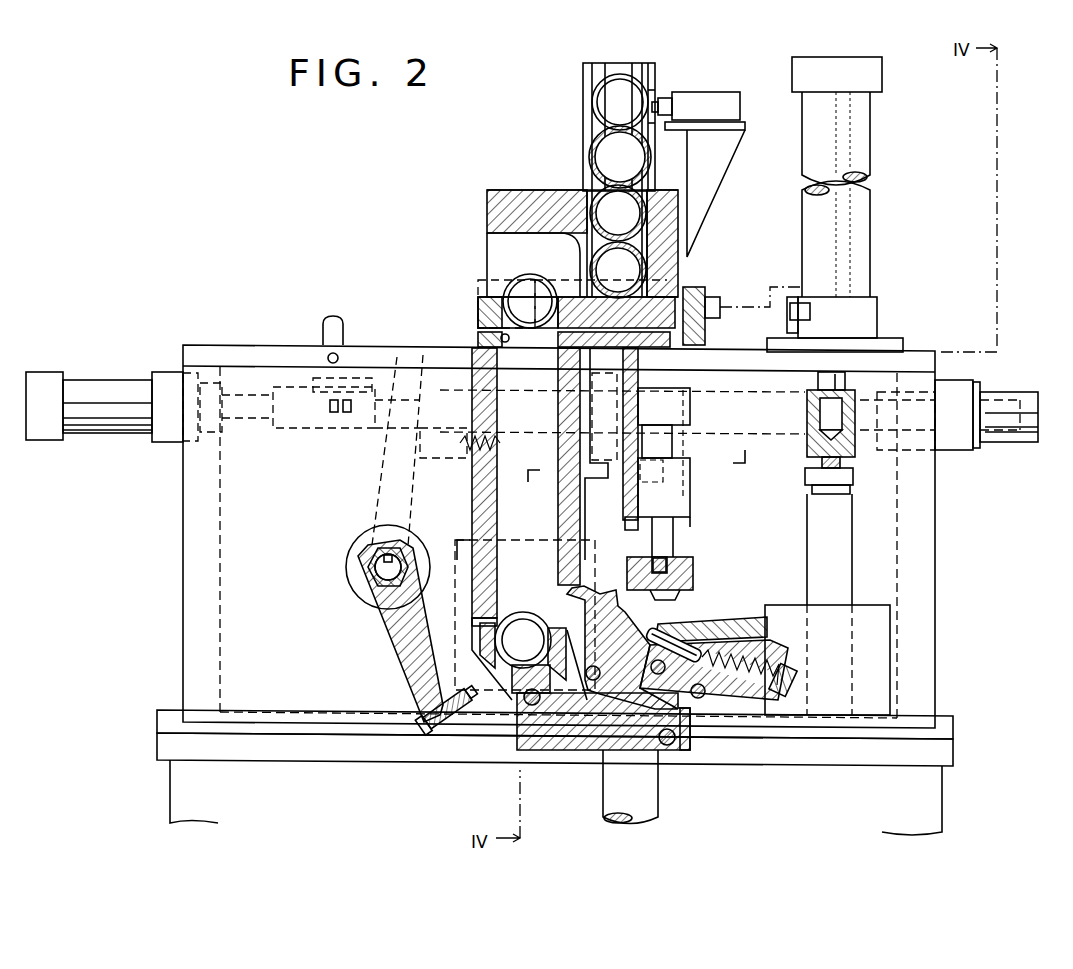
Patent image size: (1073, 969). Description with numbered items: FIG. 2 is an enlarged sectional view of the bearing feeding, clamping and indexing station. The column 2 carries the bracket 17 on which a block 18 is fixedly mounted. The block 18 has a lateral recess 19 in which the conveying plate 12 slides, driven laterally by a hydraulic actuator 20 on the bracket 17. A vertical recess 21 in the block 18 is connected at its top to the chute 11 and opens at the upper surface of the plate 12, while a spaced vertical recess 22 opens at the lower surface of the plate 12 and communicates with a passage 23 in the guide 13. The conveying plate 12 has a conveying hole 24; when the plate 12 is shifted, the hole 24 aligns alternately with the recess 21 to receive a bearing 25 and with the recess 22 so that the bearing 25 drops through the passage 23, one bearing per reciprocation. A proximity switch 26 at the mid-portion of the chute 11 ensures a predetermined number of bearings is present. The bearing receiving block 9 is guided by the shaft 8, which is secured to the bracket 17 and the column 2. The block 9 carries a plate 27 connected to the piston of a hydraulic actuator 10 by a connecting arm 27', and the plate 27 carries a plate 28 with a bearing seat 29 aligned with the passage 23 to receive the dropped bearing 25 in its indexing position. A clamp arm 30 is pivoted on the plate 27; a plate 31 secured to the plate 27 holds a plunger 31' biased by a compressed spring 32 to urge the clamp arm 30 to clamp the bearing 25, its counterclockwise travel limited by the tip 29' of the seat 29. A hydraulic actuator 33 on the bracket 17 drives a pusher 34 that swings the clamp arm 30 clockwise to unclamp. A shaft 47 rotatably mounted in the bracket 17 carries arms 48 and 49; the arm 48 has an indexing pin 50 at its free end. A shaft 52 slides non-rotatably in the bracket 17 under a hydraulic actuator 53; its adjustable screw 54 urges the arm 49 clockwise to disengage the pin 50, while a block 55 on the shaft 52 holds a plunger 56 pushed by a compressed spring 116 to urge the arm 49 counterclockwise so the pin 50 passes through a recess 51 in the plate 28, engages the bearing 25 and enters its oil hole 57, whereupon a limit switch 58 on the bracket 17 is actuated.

The column 2 is at (942, 816).
The shaft 8 is at (652, 808).
The bearing receiving block 9 is at (690, 752).
The hydraulic actuator 10 is at (862, 150).
The chute 11 is at (583, 80).
The conveying plate 12 is at (495, 307).
The guide 13 is at (475, 400).
The bracket 17 is at (935, 535).
The block 18 is at (487, 208).
The lateral recess 19 is at (680, 290).
The hydraulic actuator 20 is at (490, 272).
The vertical recess 21 is at (596, 232).
The vertical recess 22 is at (500, 342).
The passage 23 is at (470, 395).
The conveying hole 24 is at (485, 320).
The bearing 25 is at (650, 256).
The proximity switch 26 is at (715, 92).
The plate 27 is at (879, 660).
The connecting arm 27' is at (848, 543).
The plate 28 is at (520, 760).
The bearing seat 29 is at (558, 806).
The tip of receiving seat 29' is at (529, 626).
The clamp arm 30 is at (660, 625).
The plate 31 is at (718, 638).
The plunger 31' is at (711, 597).
The compressed spring 32 is at (693, 616).
The hydraulic actuator 33 is at (690, 470).
The pusher 34 is at (690, 557).
The shaft 47 is at (380, 567).
The arm 48 is at (395, 620).
The arm 49 is at (400, 470).
The indexing pin 50 is at (445, 730).
The recess 51 is at (465, 738).
The shaft 52 is at (290, 375).
The hydraulic actuator 53 is at (120, 380).
The adjustable screw 54 is at (380, 440).
The block 55 is at (440, 490).
The plunger 56 is at (420, 480).
The oil hole 57 is at (529, 628).
The limit switch 58 is at (331, 316).
The compressed spring 116 is at (375, 562).